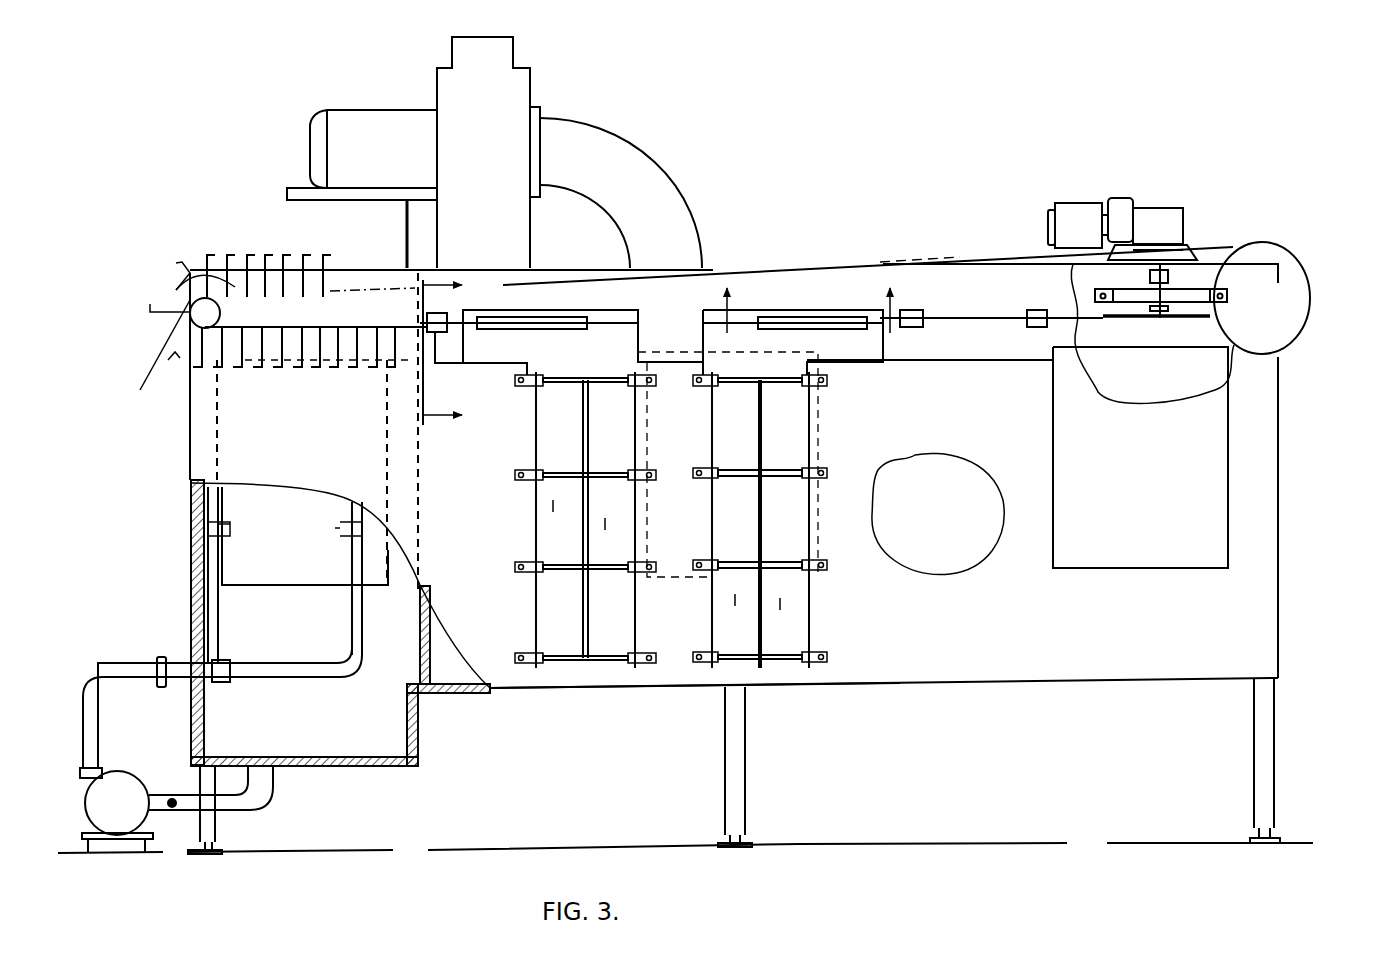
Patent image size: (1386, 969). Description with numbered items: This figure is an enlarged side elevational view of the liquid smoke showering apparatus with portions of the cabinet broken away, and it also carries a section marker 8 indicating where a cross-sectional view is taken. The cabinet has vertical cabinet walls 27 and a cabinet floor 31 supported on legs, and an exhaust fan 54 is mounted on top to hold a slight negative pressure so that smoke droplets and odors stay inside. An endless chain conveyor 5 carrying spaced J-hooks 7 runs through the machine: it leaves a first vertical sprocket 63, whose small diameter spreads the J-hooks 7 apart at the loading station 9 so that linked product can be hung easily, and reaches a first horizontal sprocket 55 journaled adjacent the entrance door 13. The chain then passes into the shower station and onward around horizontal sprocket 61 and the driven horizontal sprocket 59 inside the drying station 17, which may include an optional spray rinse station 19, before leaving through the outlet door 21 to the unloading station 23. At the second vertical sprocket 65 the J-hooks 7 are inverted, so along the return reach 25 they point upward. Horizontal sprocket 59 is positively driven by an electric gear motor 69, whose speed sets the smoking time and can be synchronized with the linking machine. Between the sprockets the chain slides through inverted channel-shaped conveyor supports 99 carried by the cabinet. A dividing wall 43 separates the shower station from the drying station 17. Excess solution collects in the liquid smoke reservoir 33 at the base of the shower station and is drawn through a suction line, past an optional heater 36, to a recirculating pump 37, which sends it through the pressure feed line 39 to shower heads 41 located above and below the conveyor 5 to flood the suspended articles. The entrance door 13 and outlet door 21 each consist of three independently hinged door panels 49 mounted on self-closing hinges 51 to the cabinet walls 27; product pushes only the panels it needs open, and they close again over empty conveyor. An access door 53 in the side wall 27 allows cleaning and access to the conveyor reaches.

The endless conveyor 5 is at (358, 372).
The J-hooks 7 is at (504, 332).
The section line 8- 8 is at (460, 347).
The loading station 9 is at (335, 355).
The entrance door 13 is at (590, 666).
The drying station 17 is at (932, 514).
The spray rinse station 19 is at (992, 312).
The outlet door 21 is at (762, 662).
The unloading station 23 is at (1028, 360).
The return reach 25 is at (790, 262).
The cabinet walls 27 is at (1228, 646).
The cabinet floor 31 is at (1005, 680).
The liquid smoke reservoir 33 is at (380, 768).
The heater 36 is at (172, 807).
The recirculating pump 37 is at (85, 806).
The pressure feed line 39 is at (105, 660).
The shower heads 41 is at (340, 525).
The dividing wall 43 is at (420, 655).
The door panels 49 is at (605, 525).
The self-closing hinges 51 is at (540, 668).
The access door 53 is at (1168, 486).
The exhaust fan 54 is at (690, 103).
The first horizontal sprocket 55 is at (547, 331).
The horizontal sprocket 59 is at (1145, 320).
The horizontal sprocket 61 is at (832, 333).
The first vertical sprocket 63 is at (195, 318).
The second vertical sprocket 65 is at (1284, 283).
The electric gear motor 69 is at (1085, 167).
The conveyor supports 99 is at (447, 333).